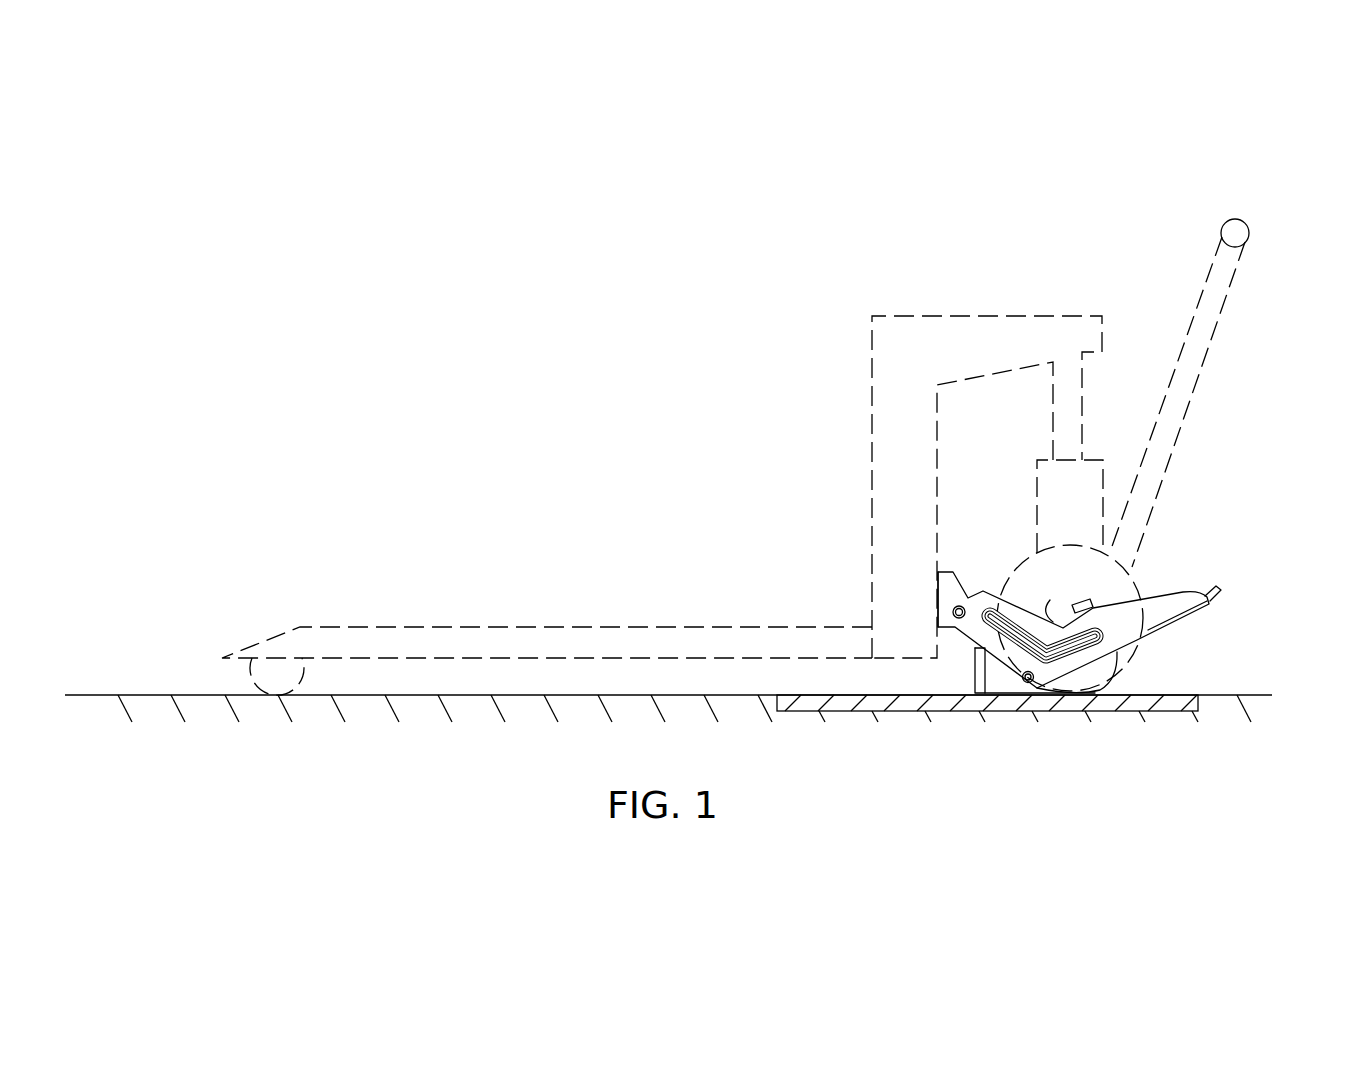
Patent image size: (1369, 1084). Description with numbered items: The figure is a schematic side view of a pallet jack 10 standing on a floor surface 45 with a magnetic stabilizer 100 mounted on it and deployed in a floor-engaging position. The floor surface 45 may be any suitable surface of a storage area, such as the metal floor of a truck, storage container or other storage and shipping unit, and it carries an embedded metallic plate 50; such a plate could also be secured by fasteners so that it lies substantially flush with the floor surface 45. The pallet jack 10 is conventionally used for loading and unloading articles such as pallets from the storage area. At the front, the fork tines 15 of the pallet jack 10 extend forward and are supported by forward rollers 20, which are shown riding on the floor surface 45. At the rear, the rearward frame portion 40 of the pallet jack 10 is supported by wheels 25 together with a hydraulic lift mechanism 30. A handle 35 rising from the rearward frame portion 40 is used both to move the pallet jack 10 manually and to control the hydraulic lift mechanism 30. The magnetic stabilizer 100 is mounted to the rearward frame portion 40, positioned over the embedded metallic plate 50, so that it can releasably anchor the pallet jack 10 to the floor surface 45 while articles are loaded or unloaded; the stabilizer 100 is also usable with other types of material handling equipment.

The pallet jack 10 is at (700, 368).
The front fork tines 15 is at (447, 627).
The forward rollers 20 is at (277, 672).
The wheels 25 is at (1112, 580).
The hydraulic lift mechanism 30 is at (1103, 460).
The handle 35 is at (1246, 222).
The rearward frame portion 40 is at (937, 505).
The floor surface 45 is at (145, 695).
The embedded metallic plate 50 is at (1057, 703).
The magnetic stabilizer 100 is at (1178, 650).